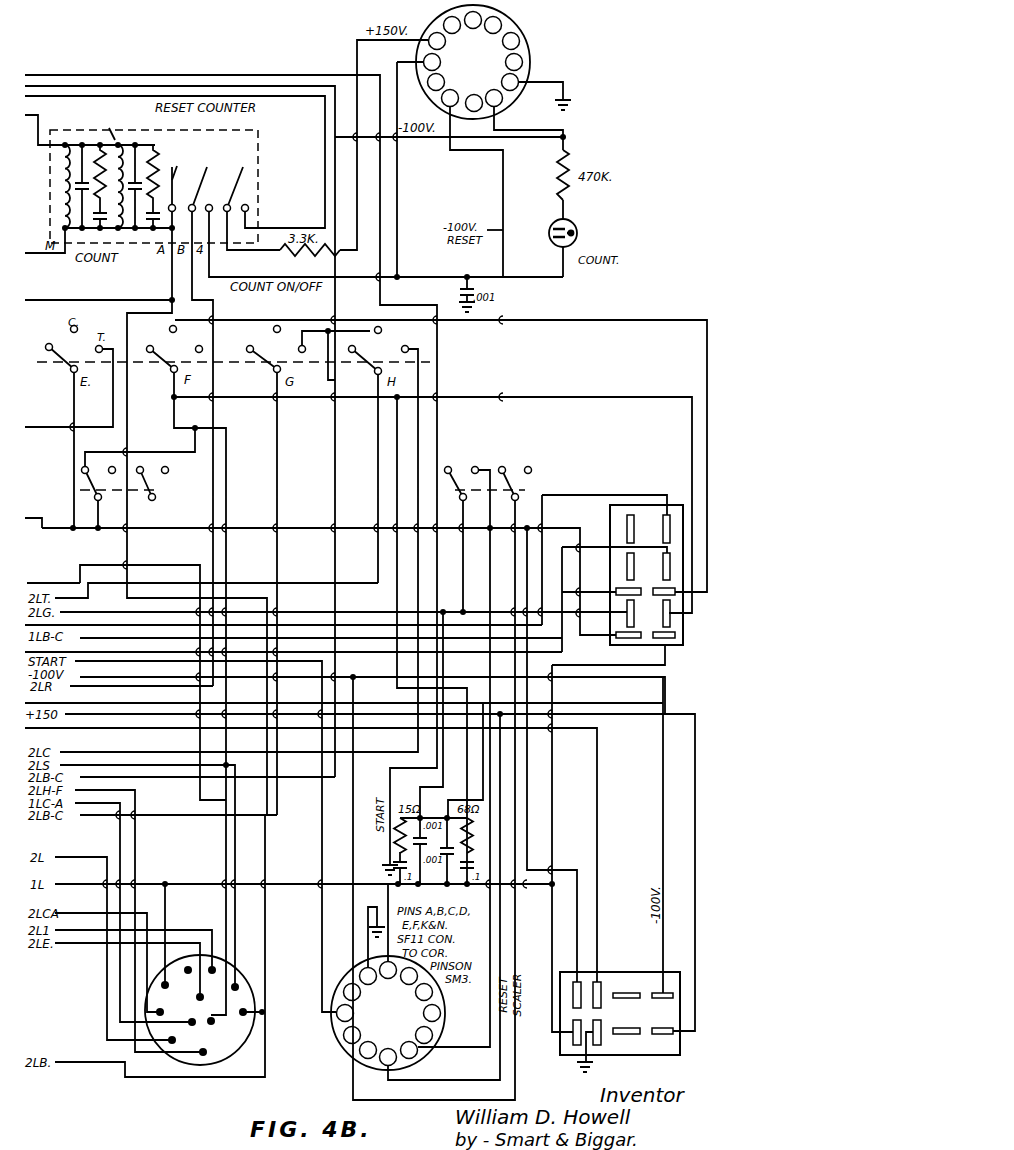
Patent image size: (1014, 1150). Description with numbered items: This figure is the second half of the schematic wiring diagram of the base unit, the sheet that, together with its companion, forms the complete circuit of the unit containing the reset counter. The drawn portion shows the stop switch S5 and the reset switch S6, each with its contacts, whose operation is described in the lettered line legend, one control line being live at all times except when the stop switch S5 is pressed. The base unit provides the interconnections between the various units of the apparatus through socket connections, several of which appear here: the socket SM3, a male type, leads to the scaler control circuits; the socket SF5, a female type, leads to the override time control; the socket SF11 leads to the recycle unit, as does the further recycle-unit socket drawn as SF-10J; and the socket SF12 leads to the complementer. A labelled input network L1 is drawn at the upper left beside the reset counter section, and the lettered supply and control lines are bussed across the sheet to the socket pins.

The reset counter input network L1 is at (45, 130).
The socket connection to scaler control circuits SM3 is at (530, 52).
The stop switch S5 is at (129, 489).
The reset switch S6 is at (491, 489).
The socket connection to override time control SF5 is at (673, 504).
The socket connection to recycle unit SF11 is at (366, 1043).
The socket connection to complementer SF12 is at (681, 1042).
The socket SF-10J is at (192, 1012).